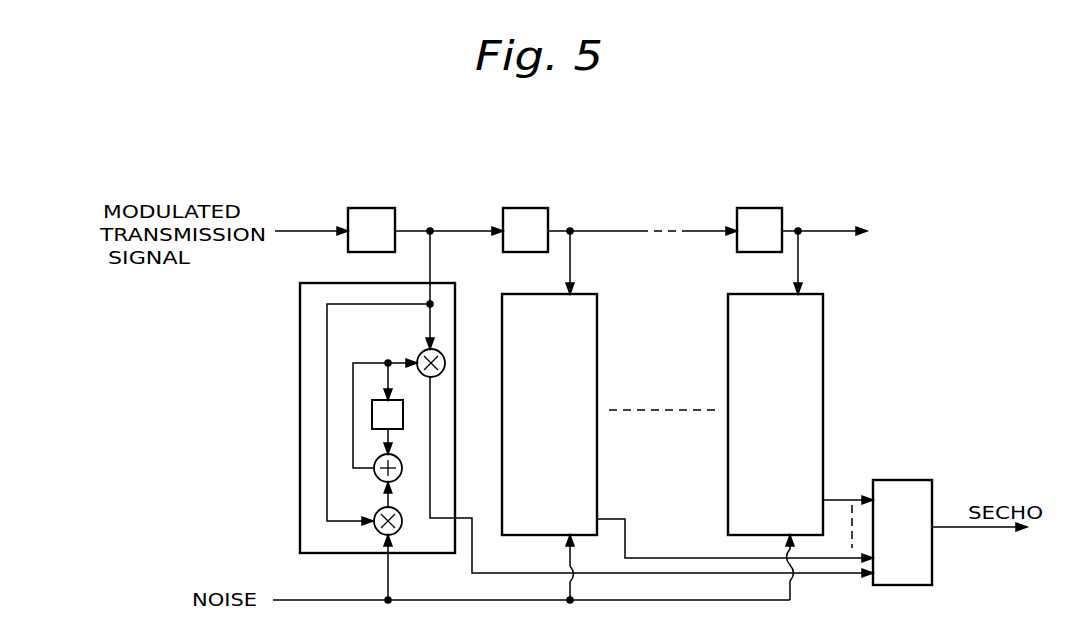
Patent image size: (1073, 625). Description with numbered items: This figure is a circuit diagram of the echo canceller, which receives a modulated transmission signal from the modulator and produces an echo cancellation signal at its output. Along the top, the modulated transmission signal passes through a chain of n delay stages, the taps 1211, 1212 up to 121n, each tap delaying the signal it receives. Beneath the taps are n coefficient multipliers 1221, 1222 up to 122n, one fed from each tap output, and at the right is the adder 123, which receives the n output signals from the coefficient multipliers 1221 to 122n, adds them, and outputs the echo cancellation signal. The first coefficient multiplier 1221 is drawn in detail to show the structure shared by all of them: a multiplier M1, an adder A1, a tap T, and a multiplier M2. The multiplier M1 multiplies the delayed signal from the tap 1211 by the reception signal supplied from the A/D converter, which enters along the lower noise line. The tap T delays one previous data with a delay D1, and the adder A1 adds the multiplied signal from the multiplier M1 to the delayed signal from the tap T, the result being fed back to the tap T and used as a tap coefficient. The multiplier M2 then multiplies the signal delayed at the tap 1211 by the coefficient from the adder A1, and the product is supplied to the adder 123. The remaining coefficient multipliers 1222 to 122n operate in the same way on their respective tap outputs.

The tap 1211 is at (377, 208).
The tap 1212 is at (530, 208).
The tap 121n is at (764, 208).
The coefficient multiplier 1221 is at (300, 373).
The coefficient multiplier 1222 is at (598, 327).
The coefficient multiplier 122n is at (824, 327).
The adder 123 is at (903, 480).
The multiplier M1 is at (374, 514).
The multiplier M2 is at (422, 349).
The delay D1 is at (372, 405).
The adder A1 is at (402, 462).